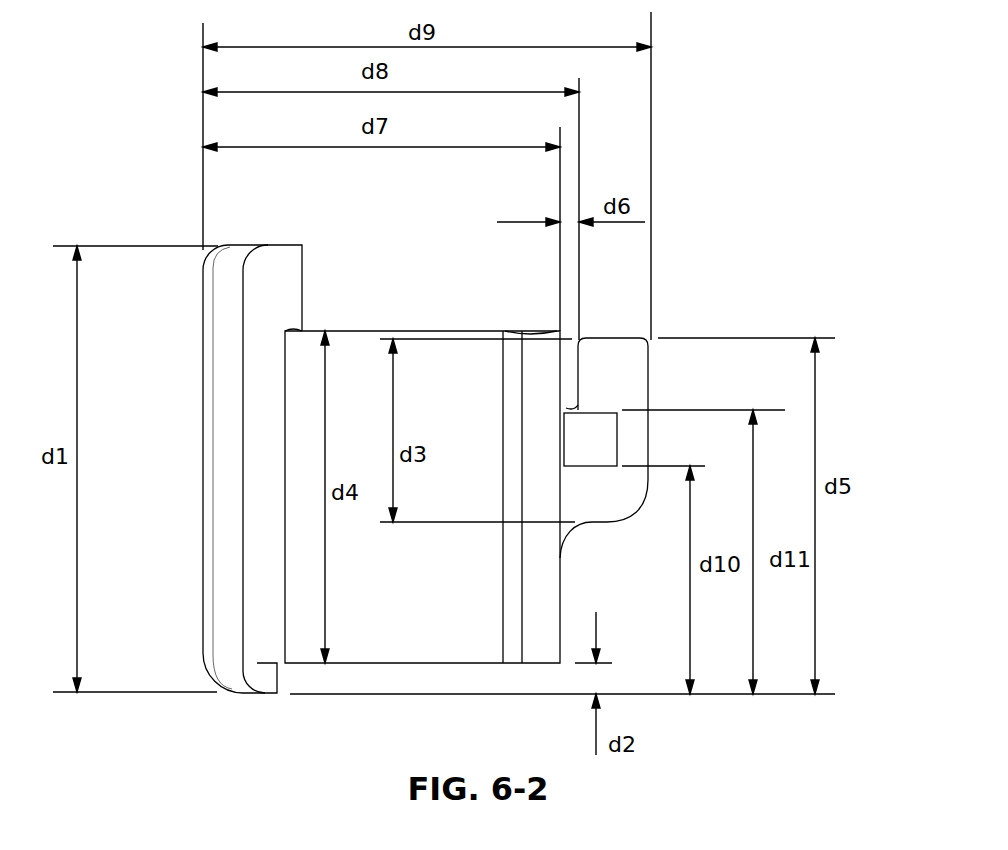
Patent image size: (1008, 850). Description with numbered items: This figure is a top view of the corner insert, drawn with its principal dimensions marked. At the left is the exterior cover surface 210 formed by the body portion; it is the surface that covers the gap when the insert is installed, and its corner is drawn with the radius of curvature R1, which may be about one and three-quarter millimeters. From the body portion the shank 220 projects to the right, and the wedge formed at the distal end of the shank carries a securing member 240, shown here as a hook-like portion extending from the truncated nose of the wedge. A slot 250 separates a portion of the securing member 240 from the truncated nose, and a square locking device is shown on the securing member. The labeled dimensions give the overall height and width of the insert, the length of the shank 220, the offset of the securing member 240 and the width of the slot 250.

The cover surface 210 is at (190, 351).
The shank 220 is at (392, 320).
The securing member 240 is at (634, 367).
The slot 250 is at (570, 404).
The radius of curvature R1 is at (195, 240).